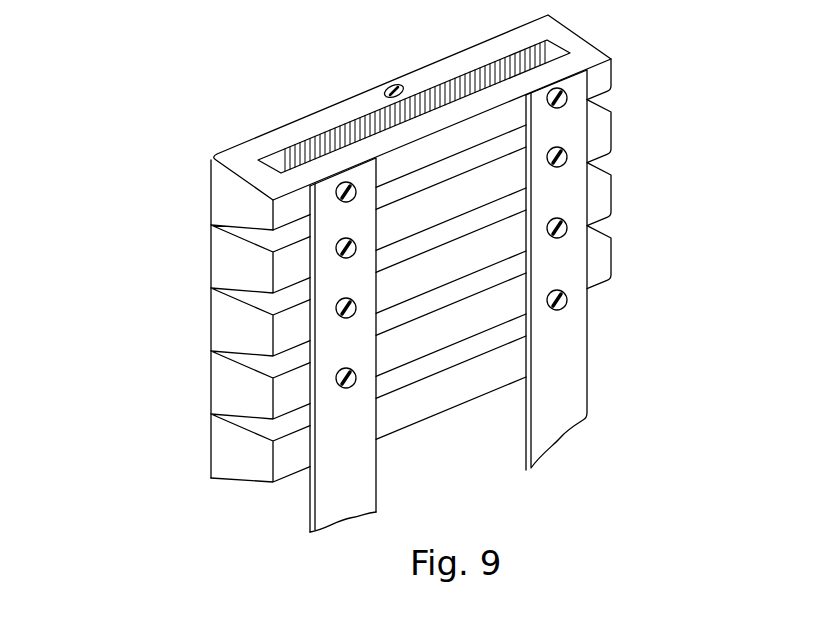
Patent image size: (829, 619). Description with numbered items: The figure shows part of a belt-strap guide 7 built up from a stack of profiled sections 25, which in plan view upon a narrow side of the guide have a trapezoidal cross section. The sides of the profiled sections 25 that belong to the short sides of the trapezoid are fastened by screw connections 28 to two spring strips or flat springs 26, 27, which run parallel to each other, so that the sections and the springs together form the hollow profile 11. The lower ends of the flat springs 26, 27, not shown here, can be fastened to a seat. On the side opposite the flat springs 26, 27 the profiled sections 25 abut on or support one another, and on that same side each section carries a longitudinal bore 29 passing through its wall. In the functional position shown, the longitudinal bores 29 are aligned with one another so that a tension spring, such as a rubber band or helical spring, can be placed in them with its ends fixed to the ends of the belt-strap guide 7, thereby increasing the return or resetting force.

The belt-strap guide 7 is at (100, 300).
The hollow profile 11 is at (265, 190).
The profiled sections 25 is at (601, 264).
The flat spring 26 is at (346, 407).
The flat spring 27 is at (572, 407).
The screw connections 28 is at (567, 300).
The longitudinal bore 29 is at (386, 92).